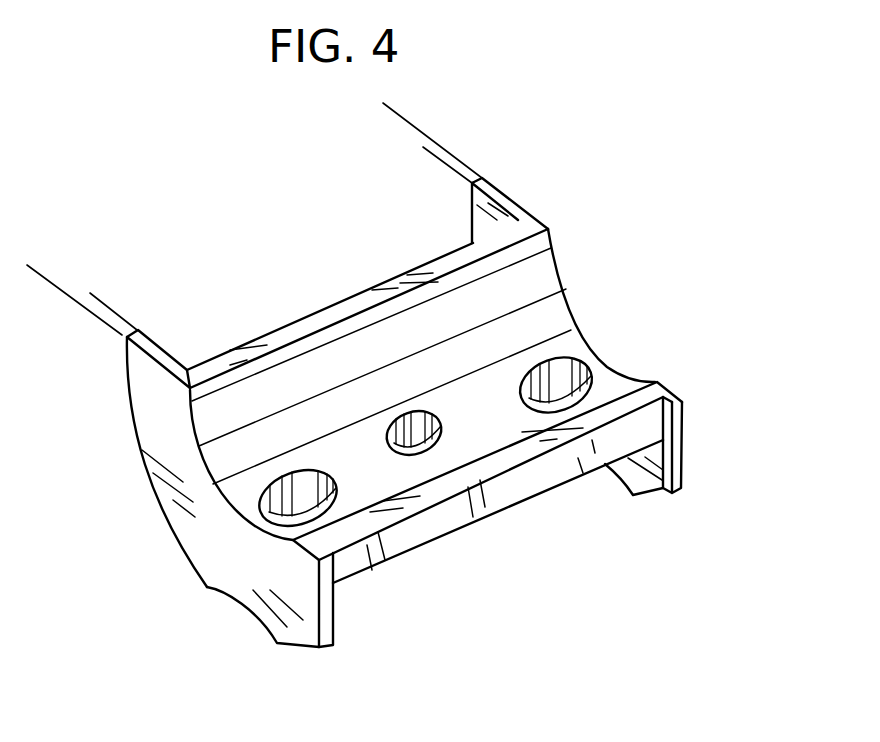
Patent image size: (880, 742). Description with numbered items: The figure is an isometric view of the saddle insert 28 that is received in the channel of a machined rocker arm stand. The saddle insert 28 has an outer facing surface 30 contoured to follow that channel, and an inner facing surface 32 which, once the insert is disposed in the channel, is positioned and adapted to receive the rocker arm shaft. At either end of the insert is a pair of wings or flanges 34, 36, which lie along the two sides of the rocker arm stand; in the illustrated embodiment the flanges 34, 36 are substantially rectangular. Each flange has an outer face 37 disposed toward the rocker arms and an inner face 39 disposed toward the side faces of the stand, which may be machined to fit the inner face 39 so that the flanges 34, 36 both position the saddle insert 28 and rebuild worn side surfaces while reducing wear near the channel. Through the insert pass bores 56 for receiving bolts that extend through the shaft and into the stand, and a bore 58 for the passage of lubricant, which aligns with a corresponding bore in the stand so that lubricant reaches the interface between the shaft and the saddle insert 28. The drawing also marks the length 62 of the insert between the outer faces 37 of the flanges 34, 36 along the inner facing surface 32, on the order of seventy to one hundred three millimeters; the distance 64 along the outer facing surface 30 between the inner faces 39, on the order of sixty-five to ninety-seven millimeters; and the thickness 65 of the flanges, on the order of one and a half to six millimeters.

The saddle insert 28 is at (673, 390).
The outer facing surface 30 is at (492, 495).
The inner facing surface 32 is at (545, 323).
The flange 34 is at (287, 627).
The flange 36 is at (682, 467).
The outer face of flange 37 is at (197, 527).
The inner face of flange 39 is at (643, 483).
The bore 56 is at (563, 387).
The bore 58 is at (415, 418).
The length 62 is at (397, 118).
The distance 64 is at (423, 160).
The thickness 65 is at (172, 293).